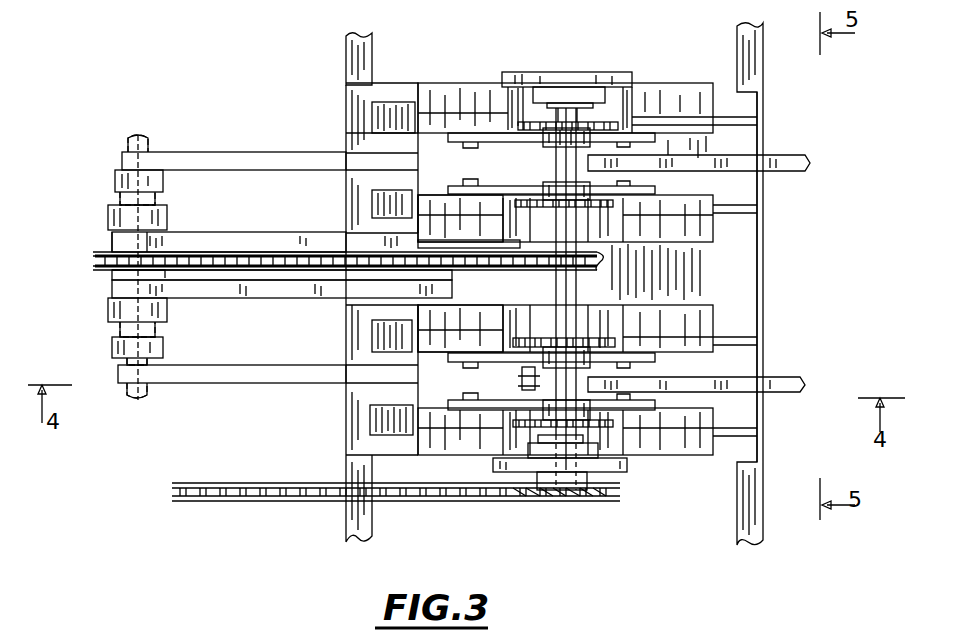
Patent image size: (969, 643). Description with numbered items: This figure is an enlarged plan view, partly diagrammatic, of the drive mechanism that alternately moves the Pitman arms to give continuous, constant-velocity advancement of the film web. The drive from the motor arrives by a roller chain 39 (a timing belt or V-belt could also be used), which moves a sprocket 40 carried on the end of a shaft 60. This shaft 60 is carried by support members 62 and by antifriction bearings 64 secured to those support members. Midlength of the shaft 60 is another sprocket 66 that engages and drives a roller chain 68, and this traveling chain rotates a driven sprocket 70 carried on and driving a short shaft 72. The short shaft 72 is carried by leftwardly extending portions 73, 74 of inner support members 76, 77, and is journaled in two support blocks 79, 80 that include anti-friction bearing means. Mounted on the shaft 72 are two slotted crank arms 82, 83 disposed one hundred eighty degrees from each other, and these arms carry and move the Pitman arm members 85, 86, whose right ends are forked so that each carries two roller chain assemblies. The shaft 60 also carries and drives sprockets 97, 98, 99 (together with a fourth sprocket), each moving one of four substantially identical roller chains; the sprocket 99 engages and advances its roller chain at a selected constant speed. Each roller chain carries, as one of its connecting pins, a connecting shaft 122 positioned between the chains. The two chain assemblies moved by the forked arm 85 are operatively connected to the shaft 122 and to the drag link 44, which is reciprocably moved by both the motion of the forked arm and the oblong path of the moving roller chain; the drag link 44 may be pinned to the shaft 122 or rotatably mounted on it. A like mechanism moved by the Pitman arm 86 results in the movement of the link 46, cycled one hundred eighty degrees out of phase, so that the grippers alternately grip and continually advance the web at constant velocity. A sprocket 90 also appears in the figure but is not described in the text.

The roller chain 39 is at (296, 501).
The sprocket 40 is at (555, 503).
The drag link 44 is at (790, 160).
The link 46 is at (788, 396).
The shaft 60 is at (575, 300).
The support members 62 is at (542, 75).
The antifriction bearings 64 is at (583, 97).
The sprocket 66 is at (600, 262).
The roller chain 68 is at (232, 272).
The driven sprocket 70 is at (95, 258).
The short shaft 72 is at (112, 238).
The leftwardly extending portion 73 is at (290, 287).
The leftwardly extending portion 74 is at (272, 240).
The inner support member 76 is at (483, 318).
The inner support member 77 is at (455, 225).
The support block 79 is at (110, 310).
The support block 80 is at (115, 218).
The slotted crank arm 82 is at (112, 347).
The slotted crank arm 83 is at (118, 178).
The Pitman arm member 85 is at (258, 375).
The Pitman arm member 86 is at (228, 165).
The sprocket 90 is at (613, 427).
The sprocket 97 is at (530, 338).
The sprocket 98 is at (530, 195).
The sprocket 99 is at (600, 121).
The connecting shaft 122 is at (522, 376).